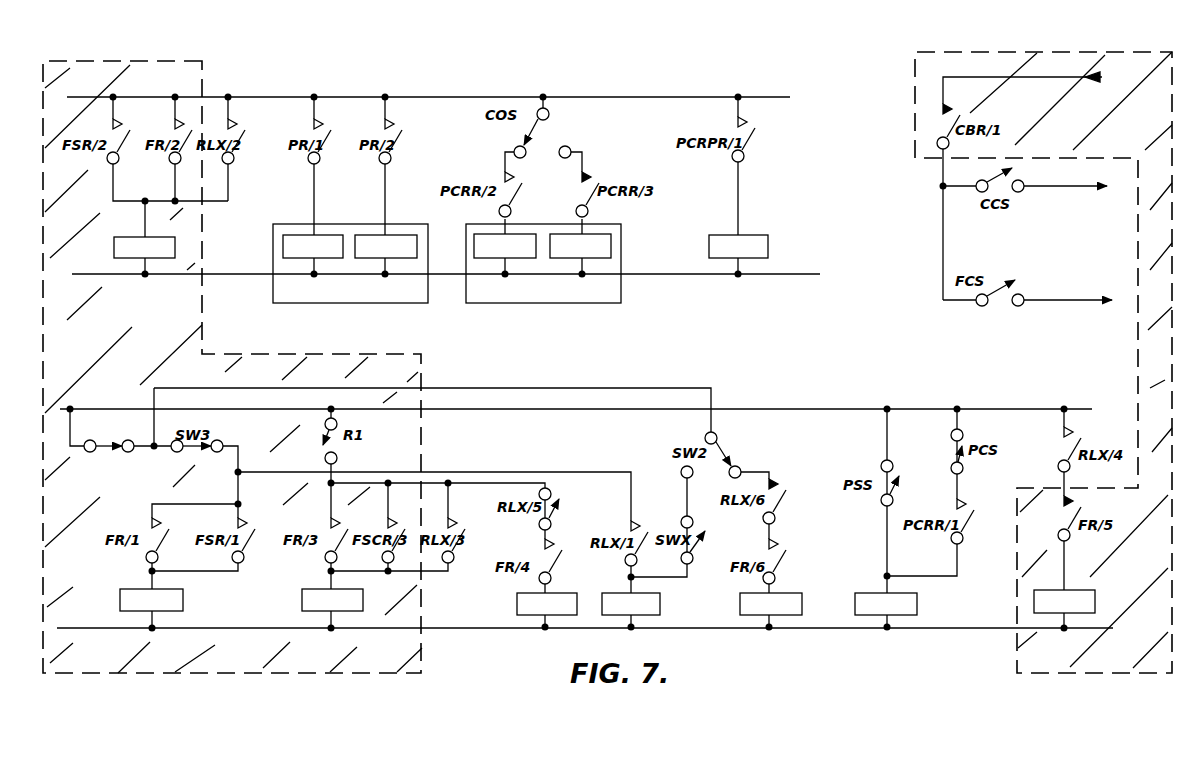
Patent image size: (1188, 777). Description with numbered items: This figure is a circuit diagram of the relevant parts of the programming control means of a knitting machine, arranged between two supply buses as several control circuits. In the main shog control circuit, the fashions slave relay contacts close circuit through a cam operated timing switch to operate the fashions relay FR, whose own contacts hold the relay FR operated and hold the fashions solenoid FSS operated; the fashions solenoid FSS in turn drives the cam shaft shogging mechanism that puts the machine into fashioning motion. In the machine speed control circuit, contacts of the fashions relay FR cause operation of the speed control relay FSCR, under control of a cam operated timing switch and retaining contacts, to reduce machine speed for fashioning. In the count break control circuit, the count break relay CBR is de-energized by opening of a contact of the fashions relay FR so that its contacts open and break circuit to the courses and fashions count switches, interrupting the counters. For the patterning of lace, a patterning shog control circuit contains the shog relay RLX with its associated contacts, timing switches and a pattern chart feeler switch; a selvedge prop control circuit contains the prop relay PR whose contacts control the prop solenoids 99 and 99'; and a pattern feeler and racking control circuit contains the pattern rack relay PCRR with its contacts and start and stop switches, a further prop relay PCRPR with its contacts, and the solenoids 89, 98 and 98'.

The prop solenoid 99 is at (313, 246).
The prop solenoid 99' is at (386, 246).
The solenoid 98' is at (505, 246).
The solenoid 98 is at (580, 246).
The solenoid 89 is at (738, 246).
The fashions solenoid FSS is at (144, 247).
The fashions relay FR is at (151, 600).
The speed control relay FSCR is at (332, 600).
The prop relay PR is at (547, 604).
The shog relay RLX is at (631, 604).
The prop relay PCRPR is at (771, 604).
The pattern rack relay PCRR is at (886, 604).
The count break relay CBR is at (1064, 601).